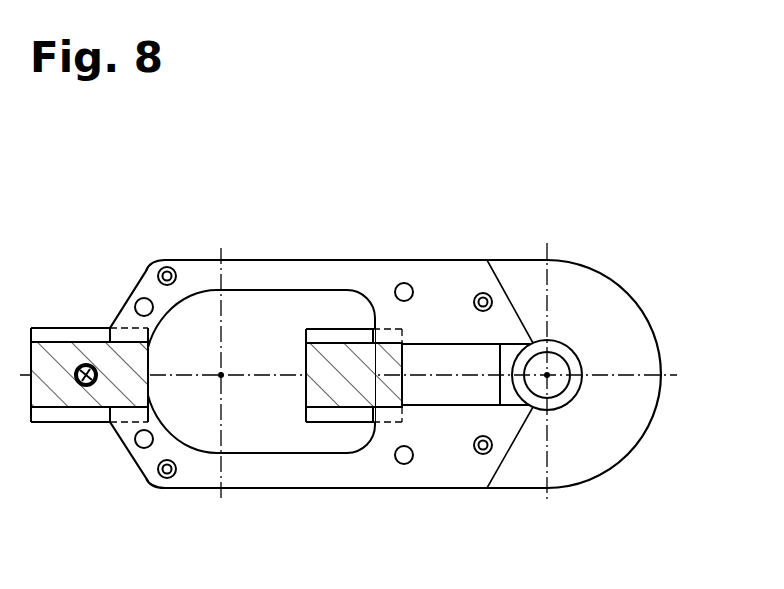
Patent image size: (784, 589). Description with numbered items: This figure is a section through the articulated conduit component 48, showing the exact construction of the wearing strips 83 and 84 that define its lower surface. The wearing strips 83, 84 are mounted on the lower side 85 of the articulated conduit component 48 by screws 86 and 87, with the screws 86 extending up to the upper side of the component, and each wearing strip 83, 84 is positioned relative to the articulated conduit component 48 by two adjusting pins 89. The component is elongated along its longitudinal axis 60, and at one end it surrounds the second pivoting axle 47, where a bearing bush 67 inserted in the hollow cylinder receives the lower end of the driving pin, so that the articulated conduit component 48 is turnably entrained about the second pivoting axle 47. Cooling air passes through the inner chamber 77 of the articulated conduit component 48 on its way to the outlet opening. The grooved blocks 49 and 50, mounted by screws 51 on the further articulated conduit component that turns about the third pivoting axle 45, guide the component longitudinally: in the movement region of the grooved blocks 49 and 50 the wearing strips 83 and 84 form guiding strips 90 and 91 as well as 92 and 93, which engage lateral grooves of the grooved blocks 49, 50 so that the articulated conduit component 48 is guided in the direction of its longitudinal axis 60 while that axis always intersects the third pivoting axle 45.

The third pivoting axle 45 is at (227, 381).
The second pivoting axle 47 is at (557, 358).
The articulated conduit component 48 is at (597, 271).
The grooved block 49 is at (55, 393).
The grooved block 50 is at (315, 357).
The screw 51 is at (82, 366).
The longitudinal axis 60 is at (665, 364).
The bearing bush 67 is at (572, 359).
The inner chamber 77 is at (315, 443).
The wearing strip 83 is at (267, 477).
The wearing strip 84 is at (267, 260).
The lower side 85 is at (633, 414).
The screw 86 is at (167, 272).
The screw 87 is at (485, 297).
The adjusting pin 89 is at (141, 300).
The guiding strip 90 is at (392, 413).
The guiding strip 91 is at (140, 412).
The guiding strip 92 is at (390, 334).
The guiding strip 93 is at (140, 336).